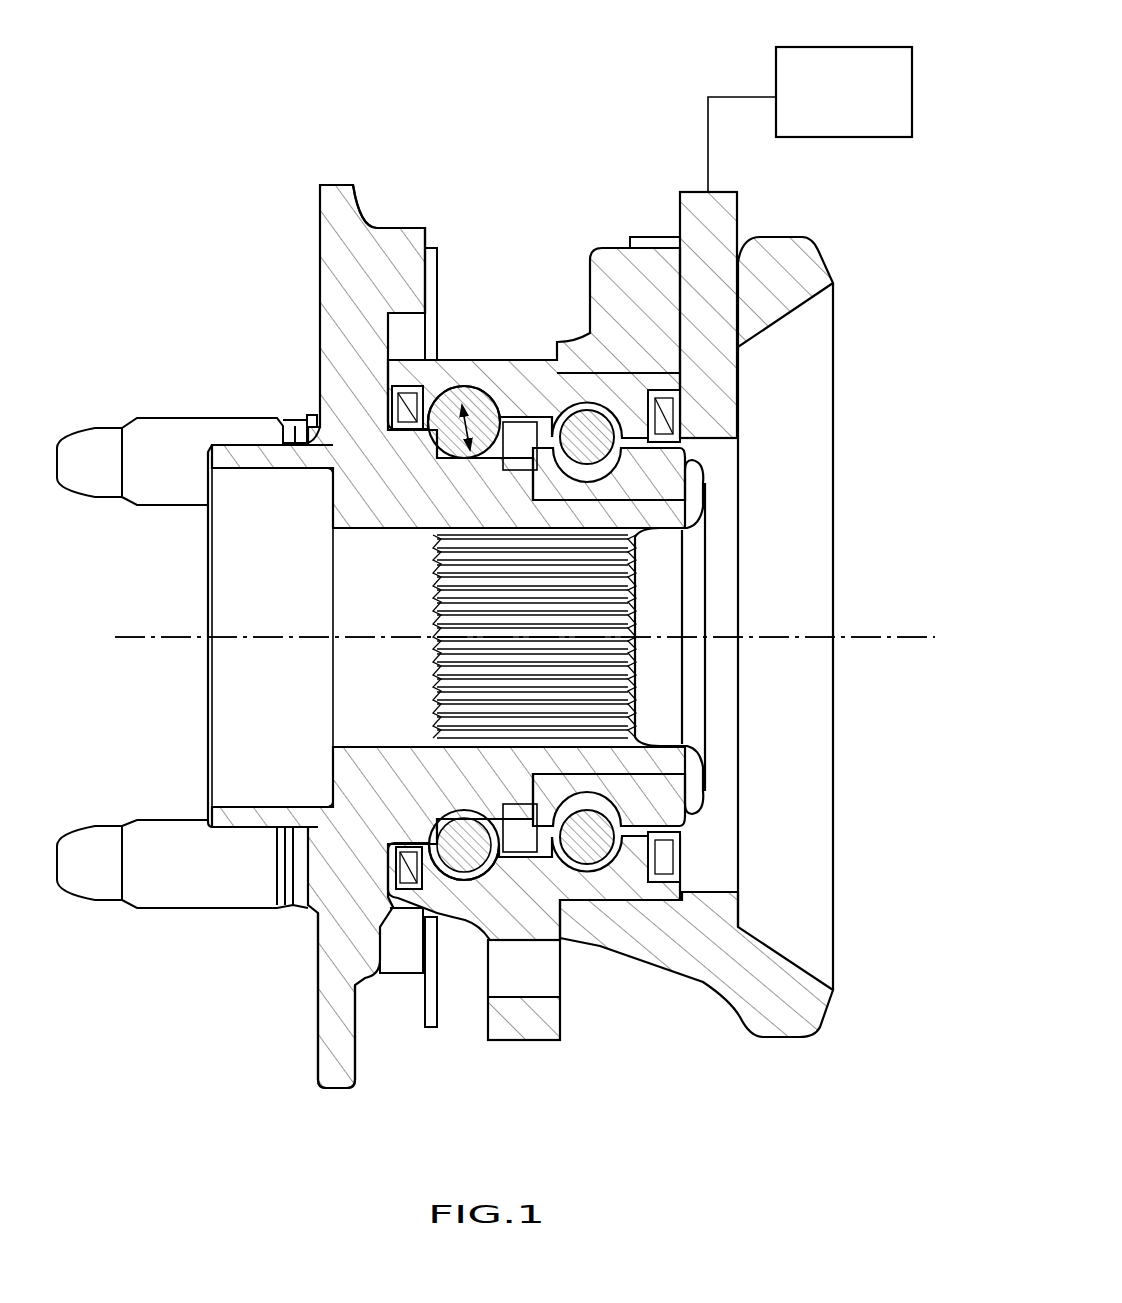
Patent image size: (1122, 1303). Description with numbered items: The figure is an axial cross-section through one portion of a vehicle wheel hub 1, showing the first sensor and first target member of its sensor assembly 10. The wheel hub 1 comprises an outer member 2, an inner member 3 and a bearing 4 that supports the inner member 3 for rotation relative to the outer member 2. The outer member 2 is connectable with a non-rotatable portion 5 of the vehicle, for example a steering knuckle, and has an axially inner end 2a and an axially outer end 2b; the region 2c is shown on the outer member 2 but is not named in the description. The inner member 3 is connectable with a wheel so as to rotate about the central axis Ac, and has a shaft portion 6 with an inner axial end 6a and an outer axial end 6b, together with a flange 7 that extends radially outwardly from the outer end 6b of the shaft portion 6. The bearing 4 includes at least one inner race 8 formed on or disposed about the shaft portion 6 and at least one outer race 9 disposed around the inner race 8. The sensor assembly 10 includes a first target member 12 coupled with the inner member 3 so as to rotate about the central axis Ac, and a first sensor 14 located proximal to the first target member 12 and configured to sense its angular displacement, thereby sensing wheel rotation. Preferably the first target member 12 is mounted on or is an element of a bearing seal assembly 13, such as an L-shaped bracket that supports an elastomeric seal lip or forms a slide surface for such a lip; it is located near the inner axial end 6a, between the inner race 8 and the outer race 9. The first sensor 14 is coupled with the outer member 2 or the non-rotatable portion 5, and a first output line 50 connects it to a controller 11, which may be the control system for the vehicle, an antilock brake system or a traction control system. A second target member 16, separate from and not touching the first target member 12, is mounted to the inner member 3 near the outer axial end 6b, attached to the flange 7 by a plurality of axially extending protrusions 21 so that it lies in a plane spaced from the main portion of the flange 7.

The vehicle wheel hub 1 is at (300, 128).
The outer member 2 is at (572, 882).
The axially inner end 2a is at (697, 893).
The axially outer end 2b is at (392, 900).
The outer ring mounting flange 2c is at (627, 893).
The inner member 3 is at (362, 792).
The bearing 4 is at (405, 395).
The non-rotatable portion 5 is at (703, 985).
The shaft portion 6 is at (697, 727).
The inner axial end 6a is at (700, 778).
The outer axial end 6b is at (392, 757).
The flange 7 is at (318, 1022).
The inner race 8 is at (464, 428).
The outer race 9 is at (464, 428).
The sensor assembly 10 is at (868, 327).
The controller 11 is at (892, 97).
The first target member 12 is at (693, 422).
The bearing seal assembly 13 is at (680, 393).
The first sensor 14 is at (676, 215).
The second target member 16 is at (450, 262).
The protrusions 21 is at (400, 235).
The first output line 50 is at (722, 97).
The central axis Ac is at (865, 635).